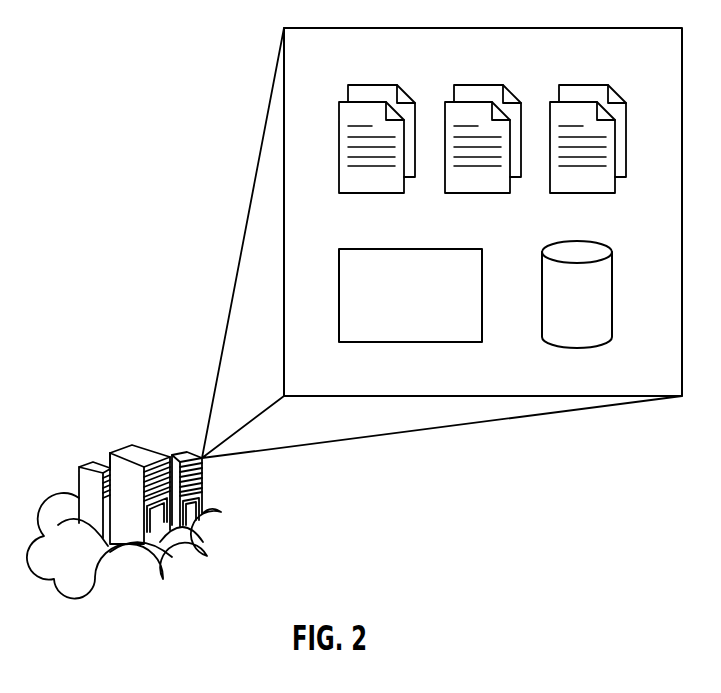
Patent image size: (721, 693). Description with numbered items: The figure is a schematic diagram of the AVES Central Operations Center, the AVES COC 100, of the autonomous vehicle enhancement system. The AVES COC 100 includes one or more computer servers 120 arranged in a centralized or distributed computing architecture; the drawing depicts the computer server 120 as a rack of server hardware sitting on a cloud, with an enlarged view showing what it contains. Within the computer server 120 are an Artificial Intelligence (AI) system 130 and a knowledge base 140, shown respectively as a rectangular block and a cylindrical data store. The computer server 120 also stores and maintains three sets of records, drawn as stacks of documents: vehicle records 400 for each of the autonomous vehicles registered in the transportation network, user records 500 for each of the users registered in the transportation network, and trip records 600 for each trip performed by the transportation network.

The AVES COC 100 is at (104, 57).
The computer server 120 is at (120, 446).
The Artificial Intelligence (AI) system 130 is at (398, 344).
The knowledge base 140 is at (577, 349).
The vehicle records 400 is at (373, 85).
The user records 500 is at (478, 85).
The trip records 600 is at (584, 85).